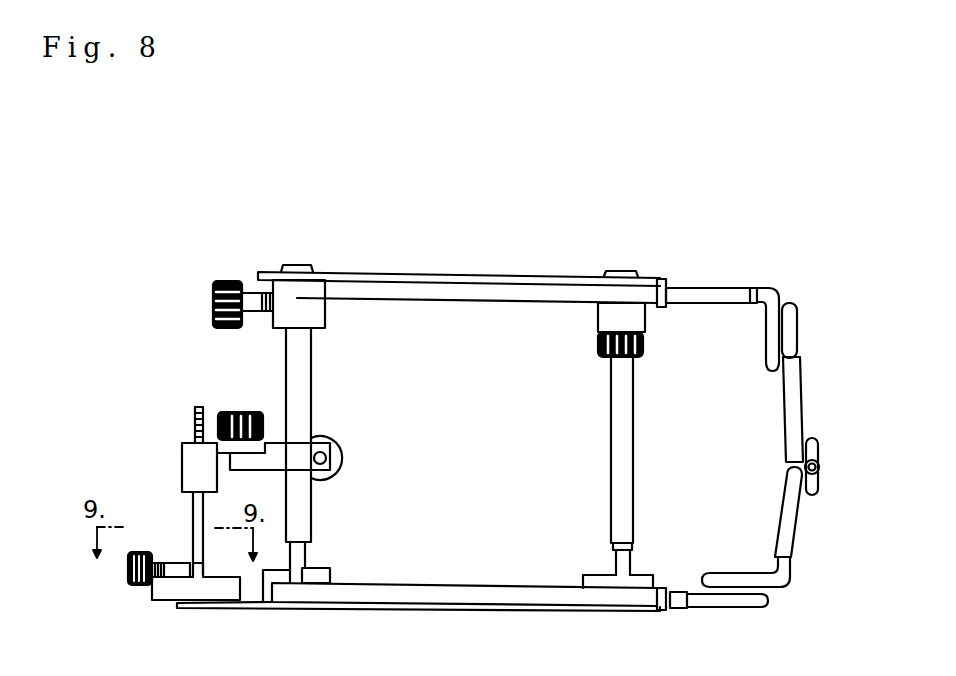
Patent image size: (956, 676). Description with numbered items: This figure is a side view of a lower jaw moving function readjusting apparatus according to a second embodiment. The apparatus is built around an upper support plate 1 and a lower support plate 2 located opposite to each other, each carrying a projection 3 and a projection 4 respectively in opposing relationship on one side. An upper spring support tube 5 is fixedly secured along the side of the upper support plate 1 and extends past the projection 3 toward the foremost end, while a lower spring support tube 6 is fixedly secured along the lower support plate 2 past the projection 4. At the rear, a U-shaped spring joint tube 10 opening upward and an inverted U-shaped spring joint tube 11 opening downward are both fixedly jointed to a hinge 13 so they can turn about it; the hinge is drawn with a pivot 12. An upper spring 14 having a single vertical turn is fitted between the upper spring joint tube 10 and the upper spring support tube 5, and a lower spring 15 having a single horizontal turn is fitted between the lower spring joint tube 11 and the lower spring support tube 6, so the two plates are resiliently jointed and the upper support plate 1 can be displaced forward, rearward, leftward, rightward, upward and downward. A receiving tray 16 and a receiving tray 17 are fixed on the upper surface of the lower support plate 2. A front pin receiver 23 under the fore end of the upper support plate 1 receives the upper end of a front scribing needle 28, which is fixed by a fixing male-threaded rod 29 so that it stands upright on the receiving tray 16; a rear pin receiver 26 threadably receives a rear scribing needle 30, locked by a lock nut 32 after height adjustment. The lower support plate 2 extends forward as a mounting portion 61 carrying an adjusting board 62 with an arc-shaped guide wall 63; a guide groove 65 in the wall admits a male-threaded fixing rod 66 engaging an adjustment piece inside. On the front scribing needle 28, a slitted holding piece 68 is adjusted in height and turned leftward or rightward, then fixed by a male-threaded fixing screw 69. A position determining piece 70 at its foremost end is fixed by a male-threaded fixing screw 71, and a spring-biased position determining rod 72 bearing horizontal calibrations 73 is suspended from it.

The upper support plate 1 is at (398, 271).
The lower support plate 2 is at (393, 609).
The projection 3 is at (673, 290).
The projection 4 is at (677, 610).
The upper spring support tube 5 is at (511, 291).
The lower spring support tube 6 is at (532, 600).
The U-shaped spring joint tube 10 is at (801, 370).
The inverted U-shaped spring joint tube 11 is at (798, 525).
The pivot 12 is at (820, 472).
The hinge 13 is at (819, 441).
The upper spring 14 is at (784, 304).
The lower spring 15 is at (748, 590).
The receiving tray 16 is at (329, 575).
The receiving tray 17 is at (583, 574).
The front pin receiver 23 is at (318, 313).
The rear pin receiver 26 is at (597, 326).
The front scribing needle 28 is at (312, 374).
The fixing male-threaded rod 29 is at (212, 302).
The rear scribing needle 30 is at (634, 428).
The lock nut 32 is at (645, 343).
The mounting portion 61 is at (258, 612).
The adjusting board 62 is at (222, 601).
The arc-shaped guide wall 63 is at (178, 562).
The guide groove 65 is at (172, 584).
The male-threaded fixing rod 66 is at (128, 586).
The holding piece 68 is at (245, 471).
The male-threaded fixing screw 69 is at (331, 472).
The position determining piece 70 is at (181, 452).
The male-threaded fixing screw 71 is at (238, 411).
The position determining rod 72 is at (192, 510).
The horizontal calibrations 73 is at (194, 428).